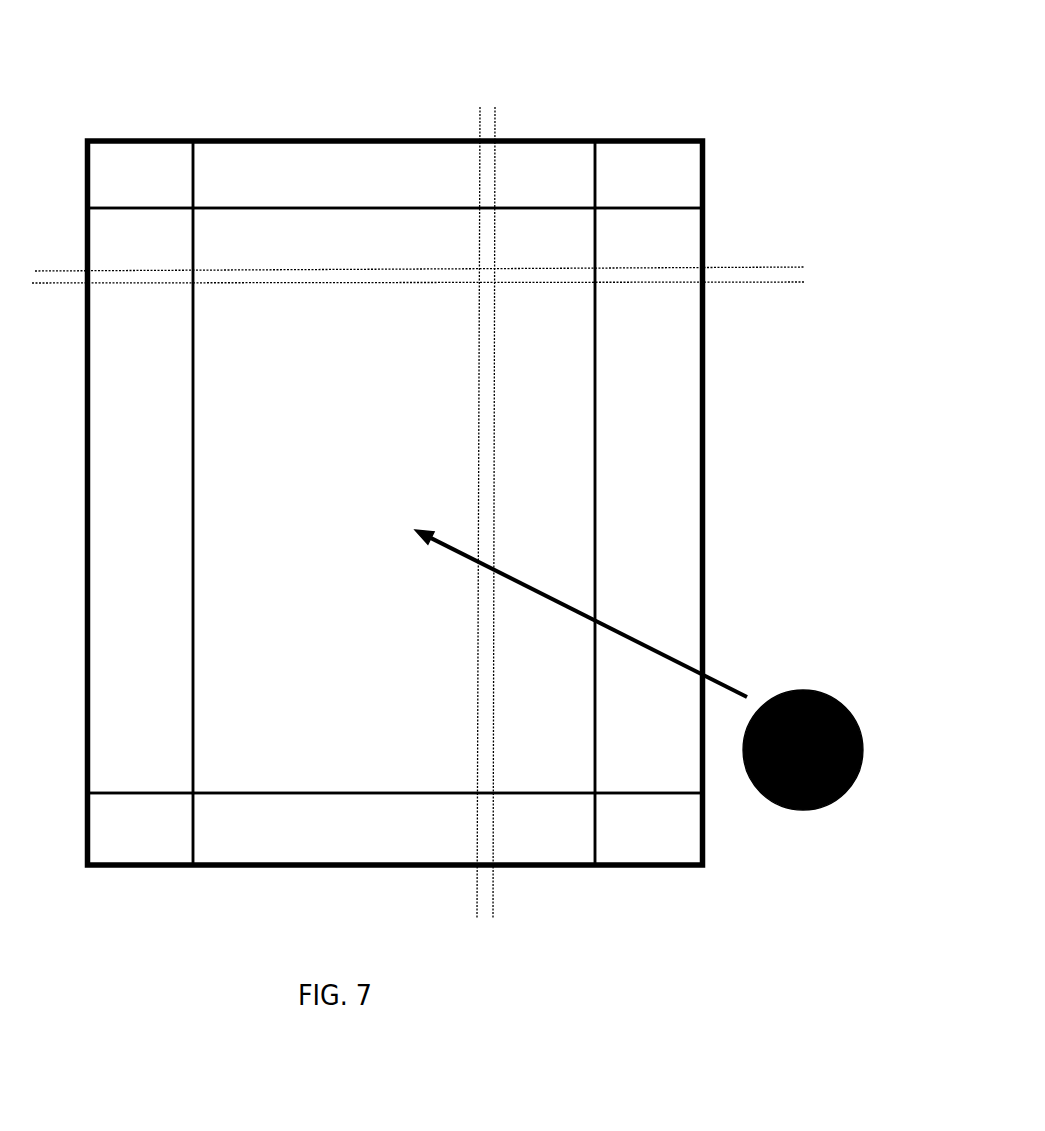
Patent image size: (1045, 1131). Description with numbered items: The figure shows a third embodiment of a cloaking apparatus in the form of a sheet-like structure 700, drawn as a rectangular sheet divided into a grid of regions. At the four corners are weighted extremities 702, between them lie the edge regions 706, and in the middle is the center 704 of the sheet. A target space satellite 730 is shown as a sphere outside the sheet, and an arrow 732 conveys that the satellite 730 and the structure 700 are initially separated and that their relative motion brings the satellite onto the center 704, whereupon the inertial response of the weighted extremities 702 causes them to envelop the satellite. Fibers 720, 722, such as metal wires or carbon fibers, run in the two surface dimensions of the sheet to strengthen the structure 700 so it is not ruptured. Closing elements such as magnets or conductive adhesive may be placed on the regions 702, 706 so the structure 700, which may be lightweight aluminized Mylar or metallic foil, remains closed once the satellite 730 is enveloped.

The sheet-like structure 700 is at (131, 108).
The weighted extremities 702 is at (165, 176).
The center 704 is at (366, 453).
The regions 706 is at (366, 176).
The fibers 720 is at (503, 98).
The fibers 722 is at (820, 257).
The target space satellite 730 is at (819, 674).
The arrow 732 is at (581, 613).